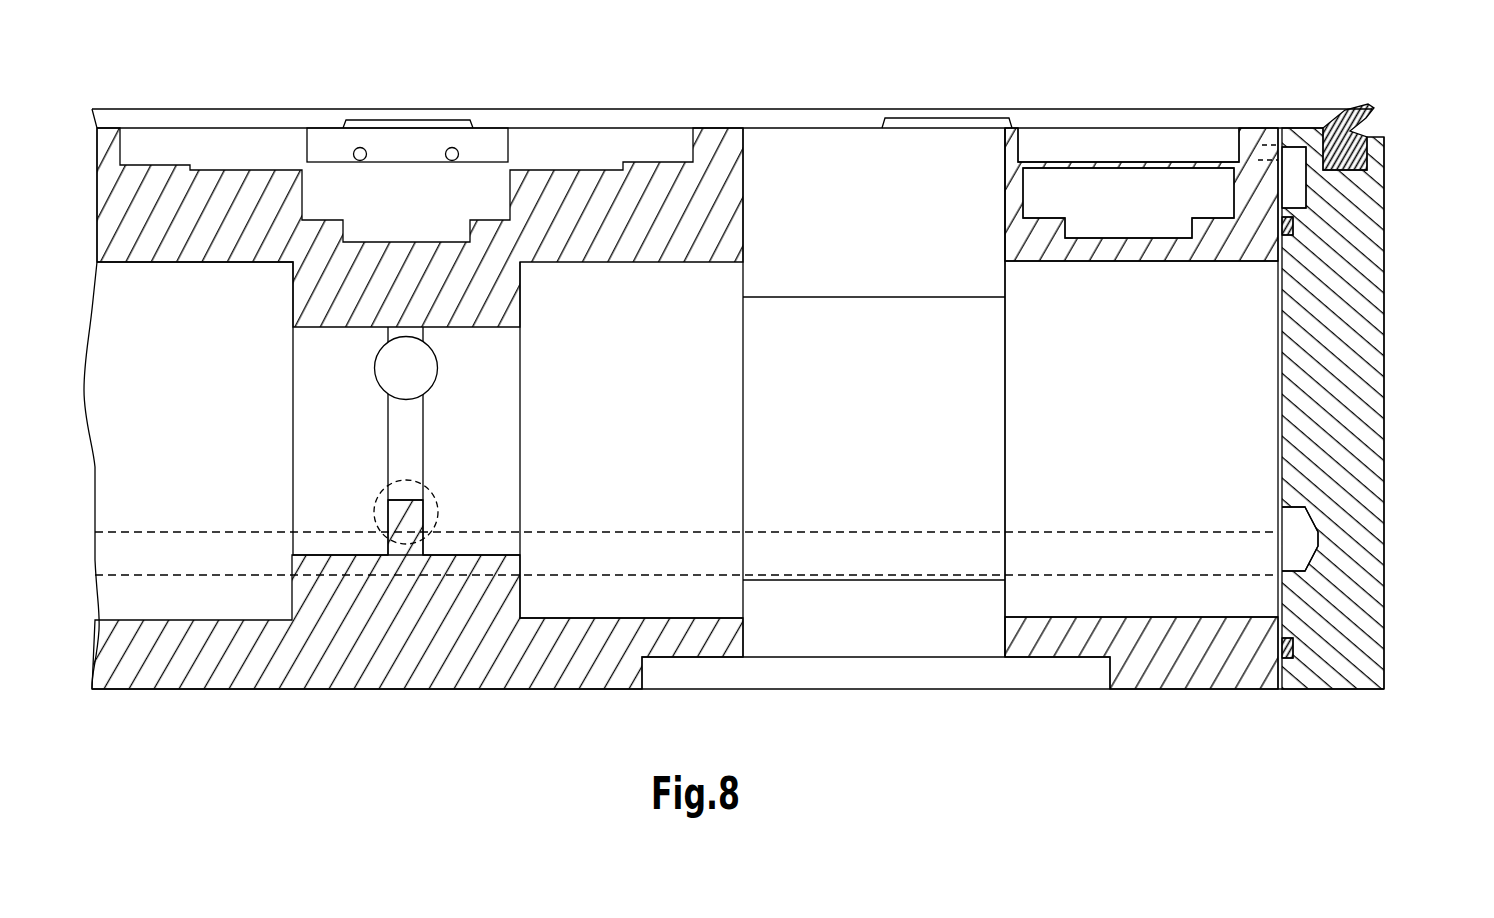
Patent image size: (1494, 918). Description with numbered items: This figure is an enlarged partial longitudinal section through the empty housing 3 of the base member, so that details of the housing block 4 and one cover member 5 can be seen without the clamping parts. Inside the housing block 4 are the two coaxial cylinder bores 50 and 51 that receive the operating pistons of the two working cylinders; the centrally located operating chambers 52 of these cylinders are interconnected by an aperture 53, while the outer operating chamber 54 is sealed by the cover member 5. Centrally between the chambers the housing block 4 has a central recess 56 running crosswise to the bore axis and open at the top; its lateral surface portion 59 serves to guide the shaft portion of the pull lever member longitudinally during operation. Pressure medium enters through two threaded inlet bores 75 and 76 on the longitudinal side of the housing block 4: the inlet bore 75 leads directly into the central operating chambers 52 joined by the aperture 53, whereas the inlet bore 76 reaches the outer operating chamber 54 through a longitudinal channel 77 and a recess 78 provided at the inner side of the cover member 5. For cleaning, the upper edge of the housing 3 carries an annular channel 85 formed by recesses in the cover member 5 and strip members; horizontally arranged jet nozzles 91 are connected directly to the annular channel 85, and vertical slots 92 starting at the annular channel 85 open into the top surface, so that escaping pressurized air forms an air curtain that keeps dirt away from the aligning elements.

The housing 3 is at (1385, 272).
The housing block 4 is at (400, 638).
The cover member 5 is at (1345, 390).
The cylinder bore 50 is at (213, 270).
The cylinder bore 51 is at (1155, 258).
The central operating chamber 52 is at (202, 478).
The aperture 53 is at (413, 447).
The outer operating chamber 54 is at (1192, 473).
The central recess 56 is at (845, 233).
The lateral surface portion 59 is at (1000, 460).
The threaded inlet bore 75 is at (395, 367).
The threaded inlet bore 76 is at (438, 508).
The longitudinal channel 77 is at (188, 553).
The recess 78 is at (1293, 537).
The annular channel 85 is at (1295, 188).
The jet nozzle 91 is at (452, 148).
The vertical slot 92 is at (1281, 140).